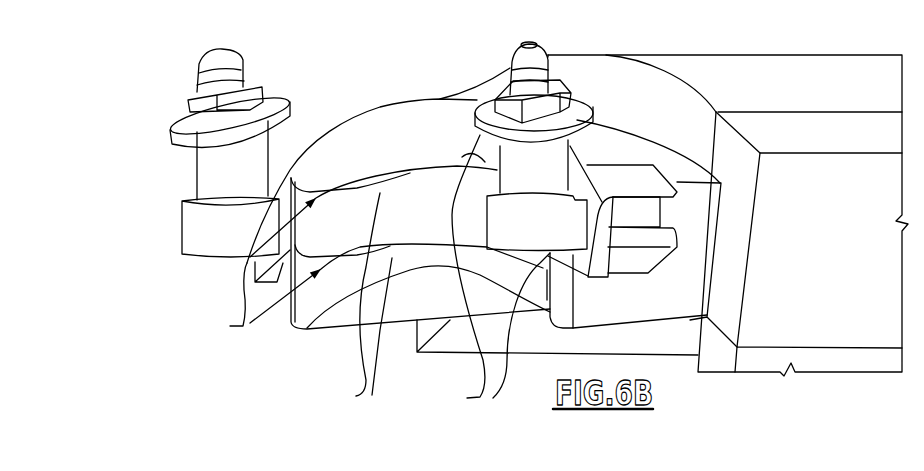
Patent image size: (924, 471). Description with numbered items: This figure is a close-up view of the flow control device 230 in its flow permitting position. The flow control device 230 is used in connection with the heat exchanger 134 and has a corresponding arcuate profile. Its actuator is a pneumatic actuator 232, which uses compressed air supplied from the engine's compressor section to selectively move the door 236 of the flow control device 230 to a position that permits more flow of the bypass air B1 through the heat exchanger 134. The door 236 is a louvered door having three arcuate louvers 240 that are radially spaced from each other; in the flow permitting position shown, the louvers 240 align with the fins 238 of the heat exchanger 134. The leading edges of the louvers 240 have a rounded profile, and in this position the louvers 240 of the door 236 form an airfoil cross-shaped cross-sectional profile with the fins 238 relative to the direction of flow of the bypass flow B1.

The heat exchanger 134 is at (718, 77).
The flow control device 230 is at (371, 90).
The pneumatic actuator 232 is at (213, 182).
The door 236 is at (400, 104).
The fins 238 is at (551, 274).
The louvers 240 is at (356, 396).
The bypass air B1 is at (175, 298).